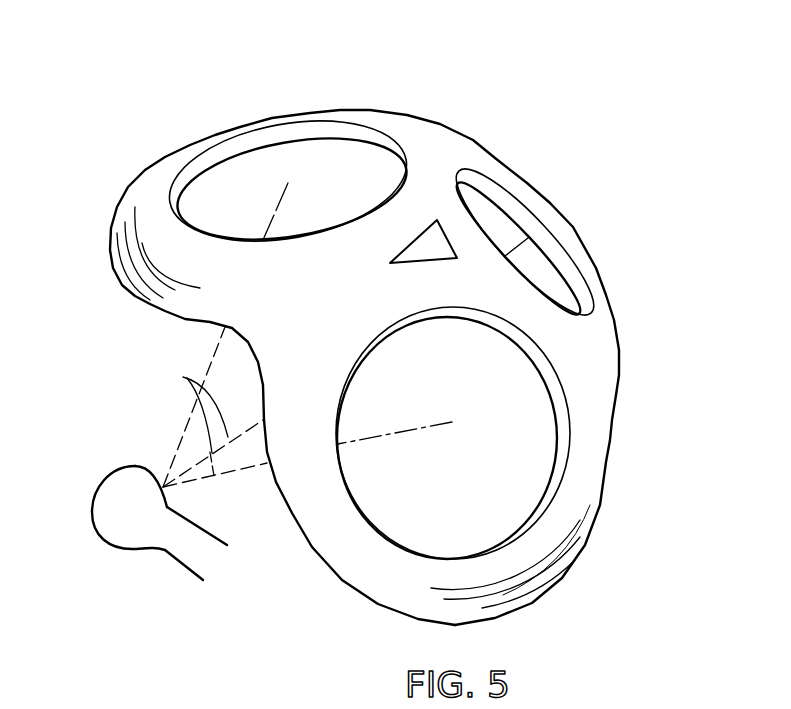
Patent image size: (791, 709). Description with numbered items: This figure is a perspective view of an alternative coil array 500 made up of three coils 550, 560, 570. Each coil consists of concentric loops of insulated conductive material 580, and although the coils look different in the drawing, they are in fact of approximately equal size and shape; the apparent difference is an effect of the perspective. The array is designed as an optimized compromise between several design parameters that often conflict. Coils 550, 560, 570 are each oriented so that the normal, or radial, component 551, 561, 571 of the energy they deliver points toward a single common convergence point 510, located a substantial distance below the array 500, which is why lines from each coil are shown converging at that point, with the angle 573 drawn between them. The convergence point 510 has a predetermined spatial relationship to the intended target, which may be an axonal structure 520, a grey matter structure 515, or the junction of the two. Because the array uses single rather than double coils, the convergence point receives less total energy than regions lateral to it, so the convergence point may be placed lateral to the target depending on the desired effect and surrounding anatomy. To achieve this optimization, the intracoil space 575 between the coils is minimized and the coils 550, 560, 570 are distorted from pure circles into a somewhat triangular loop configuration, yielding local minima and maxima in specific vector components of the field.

The coil array 500 is at (361, 104).
The convergence point 510 is at (163, 489).
The grey matter structure 515 is at (107, 533).
The axonal structure 520 is at (183, 557).
The coil 550 is at (197, 150).
The normal component 551 is at (282, 183).
The coil 560 is at (550, 212).
The normal component 561 is at (530, 252).
The coil 570 is at (573, 502).
The normal component 571 is at (452, 422).
The angle 573 is at (206, 372).
The intracoil space 575 is at (392, 262).
The insulated conductive material 580 is at (335, 563).